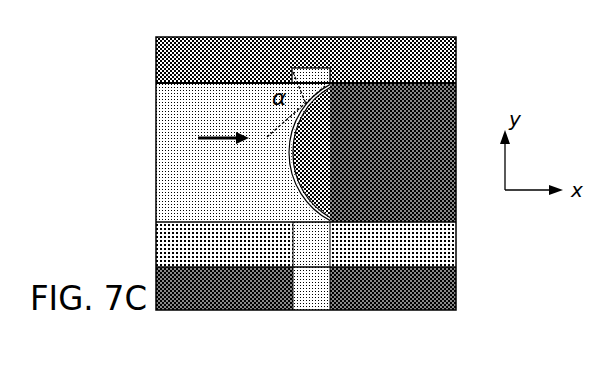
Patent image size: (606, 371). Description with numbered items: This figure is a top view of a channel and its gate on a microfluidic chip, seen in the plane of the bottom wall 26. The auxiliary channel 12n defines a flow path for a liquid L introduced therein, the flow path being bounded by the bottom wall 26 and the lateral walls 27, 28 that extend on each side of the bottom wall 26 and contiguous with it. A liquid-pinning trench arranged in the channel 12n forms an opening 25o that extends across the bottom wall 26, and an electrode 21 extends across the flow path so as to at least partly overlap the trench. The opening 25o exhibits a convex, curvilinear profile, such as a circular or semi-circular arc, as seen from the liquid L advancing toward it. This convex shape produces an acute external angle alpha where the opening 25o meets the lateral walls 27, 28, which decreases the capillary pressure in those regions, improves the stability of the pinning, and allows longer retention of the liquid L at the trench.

The liquid L is at (213, 37).
The lateral wall 27 is at (457, 88).
The auxiliary channel 12n is at (178, 187).
The bottom wall 26 is at (457, 196).
The opening of the trench 25o is at (302, 204).
The lateral wall 28 is at (156, 238).
The electrode 21 is at (308, 311).